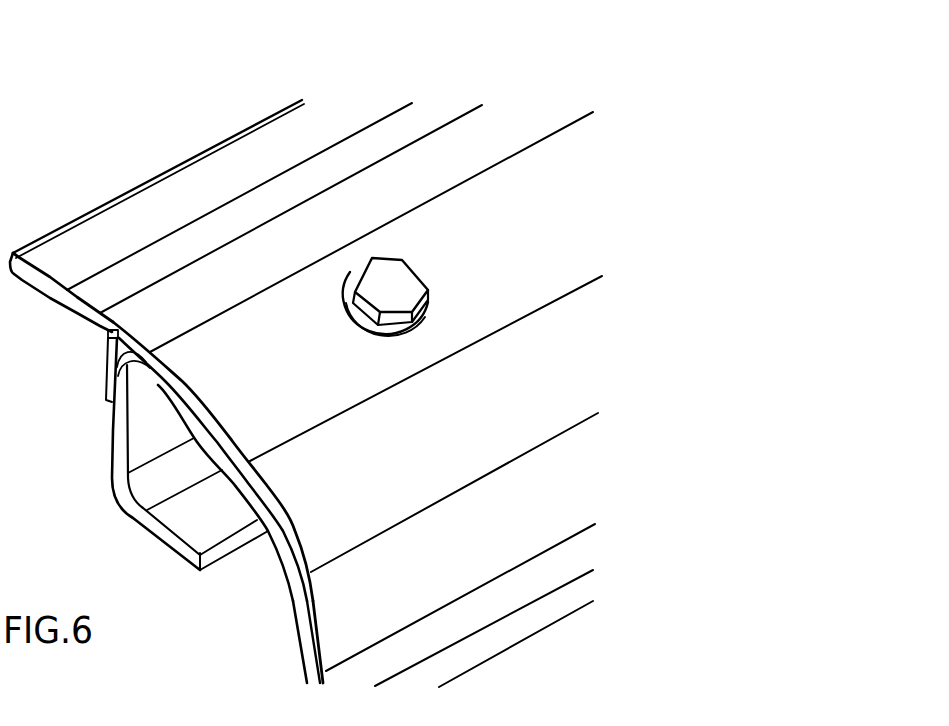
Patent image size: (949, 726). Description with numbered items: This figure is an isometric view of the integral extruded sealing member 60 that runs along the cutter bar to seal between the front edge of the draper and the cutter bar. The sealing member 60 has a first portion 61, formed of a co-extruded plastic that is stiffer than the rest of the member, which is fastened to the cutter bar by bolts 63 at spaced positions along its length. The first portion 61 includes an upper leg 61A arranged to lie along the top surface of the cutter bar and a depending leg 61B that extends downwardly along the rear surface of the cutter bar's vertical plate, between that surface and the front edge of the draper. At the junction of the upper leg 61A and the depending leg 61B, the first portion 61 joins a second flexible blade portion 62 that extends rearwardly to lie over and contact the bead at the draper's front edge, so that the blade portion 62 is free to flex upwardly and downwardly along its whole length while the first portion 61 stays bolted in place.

The sealing member 60 is at (267, 100).
The first portion 61 is at (568, 273).
The upper leg 61A is at (297, 530).
The depending leg 61B is at (107, 359).
The second flexible blade portion 62 is at (172, 208).
The bolts 63 is at (415, 268).